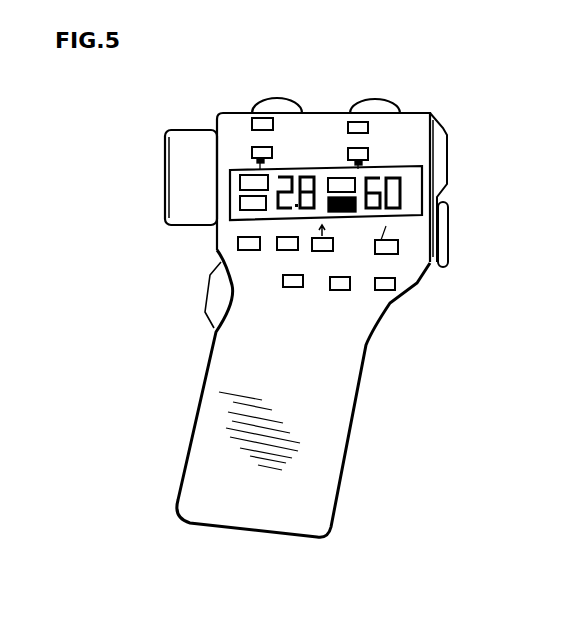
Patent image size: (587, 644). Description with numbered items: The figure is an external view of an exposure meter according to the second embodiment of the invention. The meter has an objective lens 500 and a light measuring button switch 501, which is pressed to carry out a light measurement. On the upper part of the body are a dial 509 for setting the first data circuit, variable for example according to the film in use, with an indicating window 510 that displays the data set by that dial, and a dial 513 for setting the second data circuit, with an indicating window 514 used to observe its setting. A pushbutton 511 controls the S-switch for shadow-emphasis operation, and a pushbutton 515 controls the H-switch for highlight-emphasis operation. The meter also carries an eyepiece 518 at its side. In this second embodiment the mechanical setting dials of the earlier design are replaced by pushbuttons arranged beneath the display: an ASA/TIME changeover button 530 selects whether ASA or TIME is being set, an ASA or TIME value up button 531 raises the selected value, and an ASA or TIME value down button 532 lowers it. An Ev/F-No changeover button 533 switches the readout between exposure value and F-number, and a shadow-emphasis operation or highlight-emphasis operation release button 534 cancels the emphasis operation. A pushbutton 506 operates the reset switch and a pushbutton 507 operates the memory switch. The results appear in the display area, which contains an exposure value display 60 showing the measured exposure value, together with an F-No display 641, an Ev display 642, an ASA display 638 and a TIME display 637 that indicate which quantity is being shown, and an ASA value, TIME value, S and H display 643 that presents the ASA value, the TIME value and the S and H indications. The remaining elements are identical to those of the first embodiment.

The objective lens 500 is at (166, 188).
The light measuring button switch 501 is at (211, 274).
The pushbutton for reset switch 506 is at (287, 287).
The pushbutton for memory switch 507 is at (340, 291).
The dial for setting first data circuit 509 is at (278, 99).
The indicating window 510 is at (254, 118).
The pushbutton 511 is at (251, 150).
The dial for setting second data circuit 513 is at (358, 100).
The indicating window 514 is at (369, 126).
The pushbutton 515 is at (356, 180).
The eyepiece 518 is at (448, 226).
The ASA/TIME changeover button 530 is at (238, 243).
The ASA or TIME value up button 531 is at (277, 244).
The ASA or TIME value down button 532 is at (322, 251).
The Ev/F-No changeover button 533 is at (398, 247).
The shadow-emphasis or highlight-emphasis operation release button 534 is at (395, 285).
The exposure value display 60 is at (310, 176).
The TIME display 637 is at (348, 213).
The ASA display 638 is at (389, 163).
The F-No display 641 is at (240, 181).
The Ev display 642 is at (240, 202).
The ASA value, TIME value, S and H display 643 is at (412, 182).